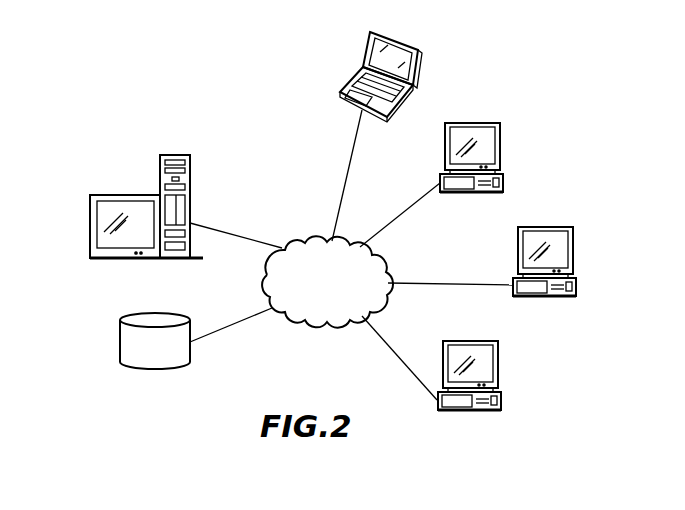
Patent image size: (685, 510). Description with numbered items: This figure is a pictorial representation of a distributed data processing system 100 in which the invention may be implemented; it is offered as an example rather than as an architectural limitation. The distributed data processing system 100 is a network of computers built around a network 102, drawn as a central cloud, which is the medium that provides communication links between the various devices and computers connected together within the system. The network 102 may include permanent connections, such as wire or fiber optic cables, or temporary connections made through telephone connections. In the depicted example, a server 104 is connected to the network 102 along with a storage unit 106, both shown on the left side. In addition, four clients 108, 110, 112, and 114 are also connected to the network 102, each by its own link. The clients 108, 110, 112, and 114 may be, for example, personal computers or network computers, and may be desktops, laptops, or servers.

The distributed data processing system 100 is at (270, 129).
The network 102 is at (351, 255).
The server 104 is at (162, 175).
The storage unit 106 is at (120, 348).
The client 108 is at (503, 153).
The client 110 is at (576, 259).
The client 112 is at (500, 369).
The client 114 is at (421, 72).